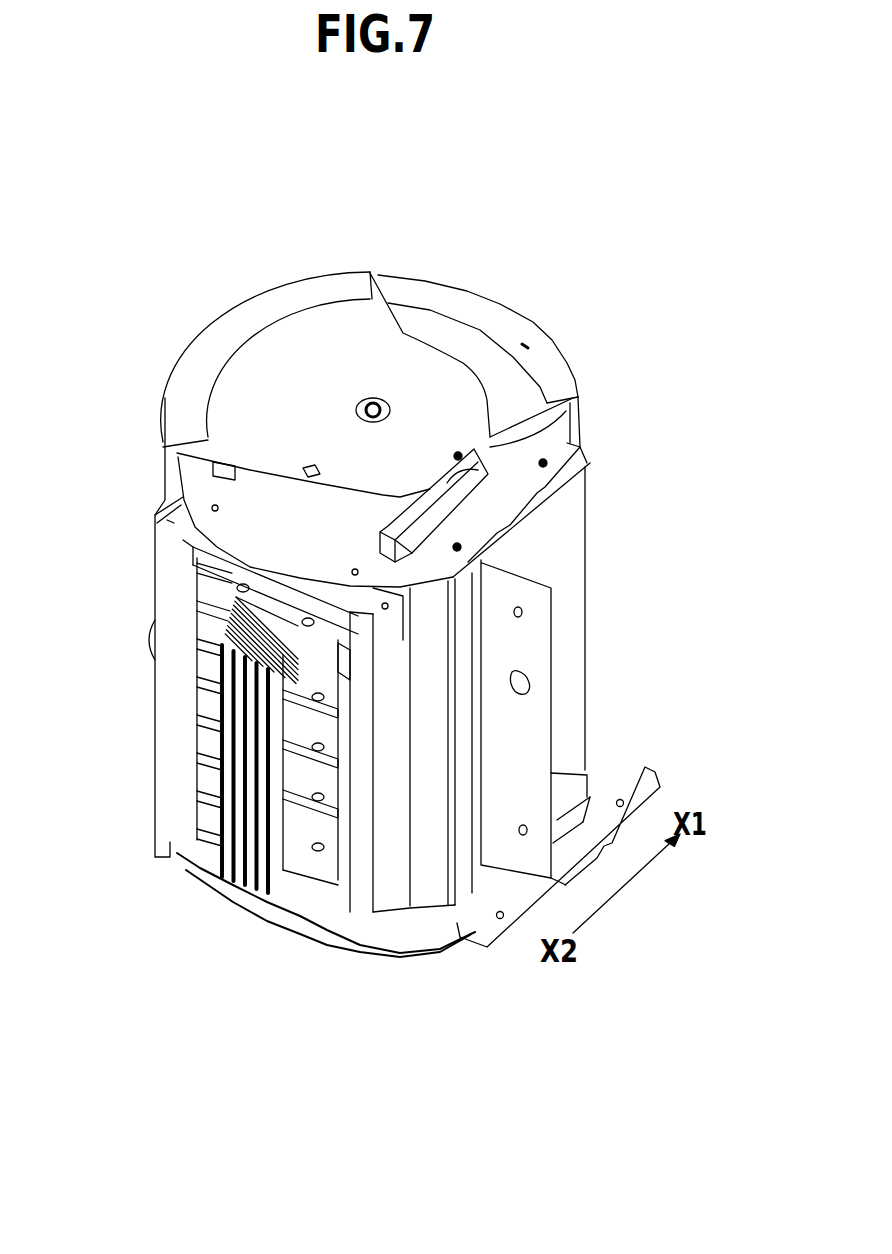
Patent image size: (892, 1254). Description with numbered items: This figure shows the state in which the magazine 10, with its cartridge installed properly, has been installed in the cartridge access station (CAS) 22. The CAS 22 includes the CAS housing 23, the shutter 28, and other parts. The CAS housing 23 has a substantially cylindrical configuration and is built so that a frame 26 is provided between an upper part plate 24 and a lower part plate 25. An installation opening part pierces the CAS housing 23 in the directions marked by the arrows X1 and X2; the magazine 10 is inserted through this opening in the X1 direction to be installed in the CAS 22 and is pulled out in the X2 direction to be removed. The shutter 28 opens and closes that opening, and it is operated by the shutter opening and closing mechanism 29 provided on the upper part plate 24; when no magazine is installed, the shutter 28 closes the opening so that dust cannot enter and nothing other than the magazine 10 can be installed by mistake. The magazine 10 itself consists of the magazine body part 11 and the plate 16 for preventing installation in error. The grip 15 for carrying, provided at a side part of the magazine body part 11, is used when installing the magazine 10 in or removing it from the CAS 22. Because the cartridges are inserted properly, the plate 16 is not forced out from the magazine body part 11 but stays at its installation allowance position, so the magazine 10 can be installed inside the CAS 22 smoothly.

The cartridge access station (CAS) 22 is at (136, 189).
The CAS housing 23 is at (522, 388).
The upper part plate 24 is at (430, 330).
The shutter 28 is at (163, 467).
The shutter opening and closing mechanism 29 is at (433, 510).
The magazine 10 is at (210, 727).
The grip for carrying 15 is at (210, 858).
The magazine body part 11 is at (310, 768).
The frame 26 is at (431, 900).
The plate for preventing installation in error 16 is at (393, 738).
The lower part plate 25 is at (297, 923).